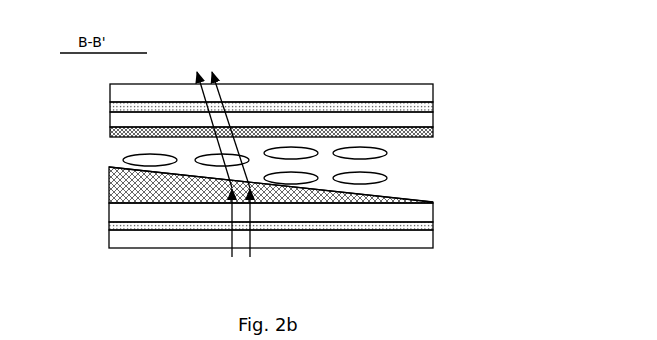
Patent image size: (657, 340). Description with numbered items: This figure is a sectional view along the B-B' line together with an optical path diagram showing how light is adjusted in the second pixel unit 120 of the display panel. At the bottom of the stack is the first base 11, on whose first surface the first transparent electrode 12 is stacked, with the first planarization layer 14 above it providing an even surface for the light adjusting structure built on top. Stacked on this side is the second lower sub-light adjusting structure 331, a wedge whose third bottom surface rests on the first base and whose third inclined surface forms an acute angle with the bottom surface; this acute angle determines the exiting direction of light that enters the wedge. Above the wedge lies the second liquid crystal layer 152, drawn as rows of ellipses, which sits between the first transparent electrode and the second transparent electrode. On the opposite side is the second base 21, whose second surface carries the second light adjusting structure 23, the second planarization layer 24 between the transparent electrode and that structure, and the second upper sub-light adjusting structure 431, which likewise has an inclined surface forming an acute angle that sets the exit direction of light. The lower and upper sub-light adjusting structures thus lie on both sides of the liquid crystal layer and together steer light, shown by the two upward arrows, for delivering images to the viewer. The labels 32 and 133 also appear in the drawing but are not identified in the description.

The second pixel unit 120 is at (281, 50).
The second base 21 is at (110, 84).
The second light adjusting structure 23 is at (110, 102).
The third layer 32 is at (110, 112).
The second planarization layer 24 is at (110, 127).
The second upper sub-light adjusting structure 431 is at (108, 139).
The second liquid crystal layer 152 is at (443, 168).
The second lower sub-light adjusting structure 331 is at (109, 190).
The inclined surface 133 is at (394, 195).
The first planarization layer 14 is at (110, 208).
The first transparent electrode 12 is at (110, 226).
The first base 11 is at (110, 246).